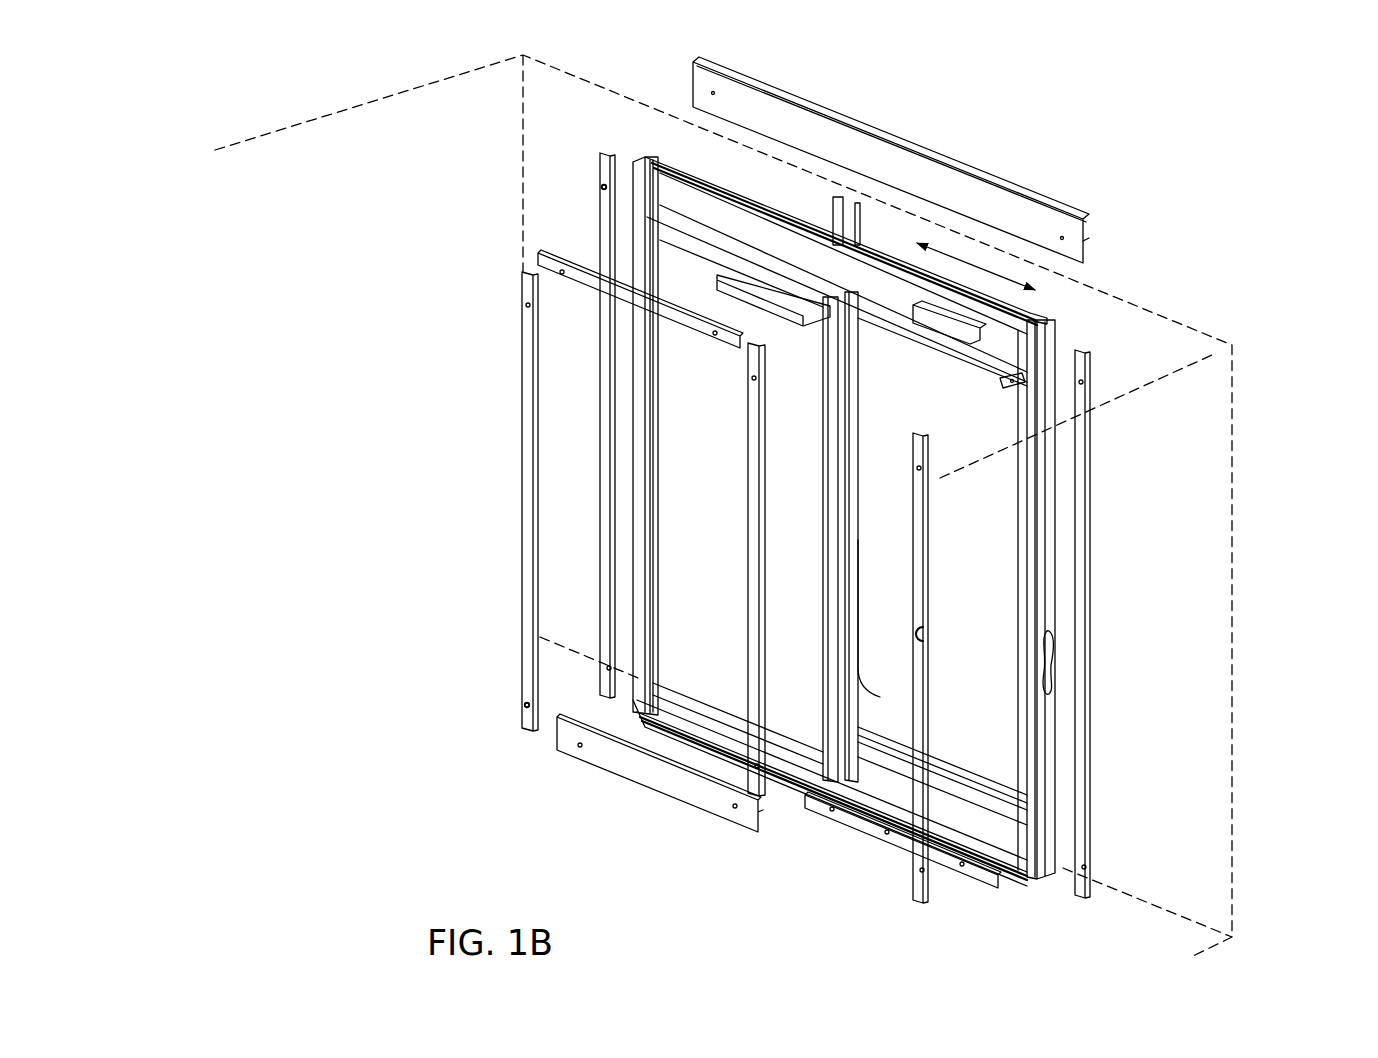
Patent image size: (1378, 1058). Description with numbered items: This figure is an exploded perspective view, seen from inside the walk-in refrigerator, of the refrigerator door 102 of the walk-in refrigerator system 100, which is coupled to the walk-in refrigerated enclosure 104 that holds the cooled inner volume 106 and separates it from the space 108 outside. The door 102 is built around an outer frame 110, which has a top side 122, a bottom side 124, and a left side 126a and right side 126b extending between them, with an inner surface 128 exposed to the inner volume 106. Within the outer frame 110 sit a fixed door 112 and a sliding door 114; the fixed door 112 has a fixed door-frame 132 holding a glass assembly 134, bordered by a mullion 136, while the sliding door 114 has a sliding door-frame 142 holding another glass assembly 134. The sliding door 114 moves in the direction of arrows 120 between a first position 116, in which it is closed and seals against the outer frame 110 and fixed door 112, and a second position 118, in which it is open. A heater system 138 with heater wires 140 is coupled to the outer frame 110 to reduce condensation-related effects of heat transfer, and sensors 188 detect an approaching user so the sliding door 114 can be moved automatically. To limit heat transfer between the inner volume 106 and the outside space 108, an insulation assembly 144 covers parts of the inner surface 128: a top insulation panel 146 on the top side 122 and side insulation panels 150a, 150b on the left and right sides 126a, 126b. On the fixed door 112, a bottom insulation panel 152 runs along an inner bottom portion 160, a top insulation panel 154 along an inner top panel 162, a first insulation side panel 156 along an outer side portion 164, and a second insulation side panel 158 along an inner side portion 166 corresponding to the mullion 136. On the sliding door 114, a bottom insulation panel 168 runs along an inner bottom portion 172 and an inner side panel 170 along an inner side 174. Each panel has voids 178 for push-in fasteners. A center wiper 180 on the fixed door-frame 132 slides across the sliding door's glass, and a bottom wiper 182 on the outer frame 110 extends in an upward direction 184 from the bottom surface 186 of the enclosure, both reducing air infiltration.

The walk-in refrigerator system 100 is at (1268, 76).
The refrigerator door 102 is at (1070, 310).
The walk-in refrigerated enclosure 104 is at (1195, 335).
The inner volume 106 is at (286, 452).
The space outside the walk-in refrigerator 108 is at (1239, 237).
The outer frame 110 is at (651, 137).
The fixed door 112 is at (702, 505).
The sliding door 114 is at (978, 572).
The first position 116 is at (1017, 402).
The second position 118 is at (866, 325).
The arrows 120 is at (968, 255).
The top side 122 is at (775, 213).
The bottom side 124 is at (1013, 868).
The left side 126a is at (1048, 352).
The right side 126b is at (633, 158).
The inner surface 128 is at (740, 223).
The fixed door-frame 132 is at (645, 397).
The glass assembly 134 is at (688, 440).
The mullion 136 is at (817, 583).
The heater system 138 is at (1058, 695).
The heater wires 140 is at (1045, 677).
The sliding door-frame 142 is at (1000, 367).
The insulation assembly 144 is at (482, 296).
The top insulation panel 146 is at (878, 136).
The side insulation panel 150a is at (1087, 442).
The side insulation panel 150b is at (597, 240).
The bottom insulation panel 152 is at (605, 772).
The top insulation panel 154 is at (537, 258).
The first insulation side panel 156 is at (522, 412).
The second insulation side panel 158 is at (750, 628).
The inner bottom portion 160 is at (722, 730).
The inner top panel 162 is at (760, 265).
The outer side portion 164 is at (636, 560).
The inner side portion 166 is at (821, 484).
The bottom insulation panel 168 is at (957, 767).
The inner side panel 170 is at (928, 547).
The inner bottom portion 172 is at (885, 782).
The inner side 174 is at (1015, 599).
The voids 178 is at (527, 707).
The center wiper 180 is at (880, 636).
The bottom wiper 182 is at (897, 850).
The upward direction 184 is at (995, 903).
The bottom surface 186 is at (704, 920).
The sensors 188 is at (938, 323).